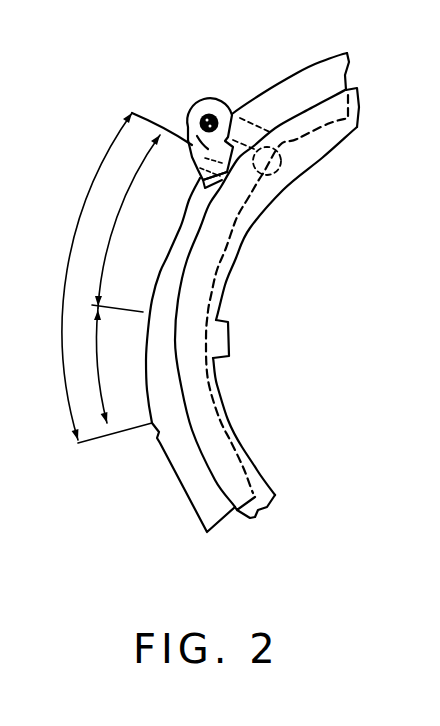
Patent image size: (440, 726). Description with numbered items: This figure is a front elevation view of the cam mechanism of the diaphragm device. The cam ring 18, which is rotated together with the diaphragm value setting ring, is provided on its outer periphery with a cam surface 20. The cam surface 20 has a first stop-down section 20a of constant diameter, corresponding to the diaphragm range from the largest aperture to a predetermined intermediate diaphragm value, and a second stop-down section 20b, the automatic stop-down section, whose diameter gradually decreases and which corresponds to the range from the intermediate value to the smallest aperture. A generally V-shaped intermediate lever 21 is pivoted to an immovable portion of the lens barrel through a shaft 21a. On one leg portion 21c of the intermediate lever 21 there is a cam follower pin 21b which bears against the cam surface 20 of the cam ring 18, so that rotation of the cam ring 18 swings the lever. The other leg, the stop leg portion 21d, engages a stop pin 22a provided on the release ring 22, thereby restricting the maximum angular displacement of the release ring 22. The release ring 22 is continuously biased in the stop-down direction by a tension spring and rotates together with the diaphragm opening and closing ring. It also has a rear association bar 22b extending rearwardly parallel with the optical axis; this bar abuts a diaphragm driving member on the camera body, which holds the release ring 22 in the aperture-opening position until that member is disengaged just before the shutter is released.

The cam ring 18 is at (180, 470).
The cam surface 20 is at (82, 276).
The first stop-down section 20a is at (109, 375).
The second stop-down section 20b is at (120, 223).
The intermediate lever 21 is at (213, 102).
The shaft 21a is at (204, 118).
The cam follower pin 21b is at (195, 181).
The leg portion 21c is at (188, 133).
The stop leg portion 21d is at (282, 162).
The release ring 22 is at (224, 263).
The stop pin 22a is at (270, 176).
The rear association bar 22b is at (228, 358).